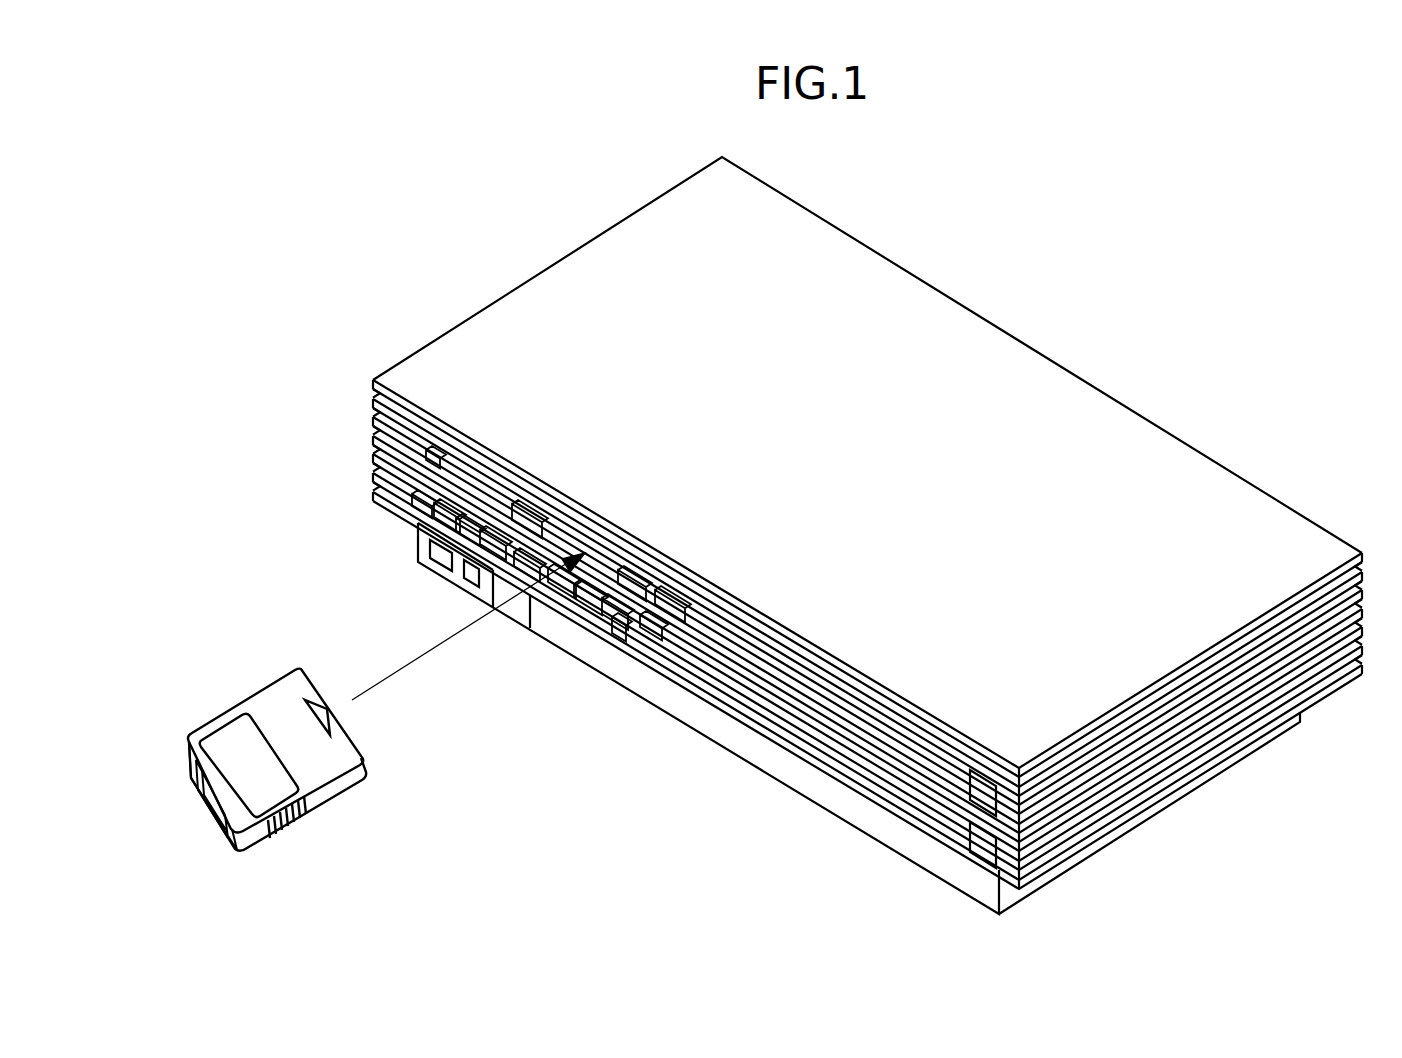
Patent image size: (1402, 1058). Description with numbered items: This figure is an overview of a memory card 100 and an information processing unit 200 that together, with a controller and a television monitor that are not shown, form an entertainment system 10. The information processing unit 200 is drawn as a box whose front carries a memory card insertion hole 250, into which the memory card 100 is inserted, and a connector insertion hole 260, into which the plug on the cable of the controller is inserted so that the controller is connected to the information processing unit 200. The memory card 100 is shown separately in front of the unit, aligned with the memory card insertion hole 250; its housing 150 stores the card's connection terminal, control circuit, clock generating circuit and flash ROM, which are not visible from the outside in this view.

The entertainment system 10 is at (308, 265).
The memory card 100 is at (318, 772).
The housing 150 is at (186, 748).
The information processing unit 200 is at (945, 333).
The memory card insertion hole 250 is at (585, 545).
The connector insertion hole 260 is at (418, 528).